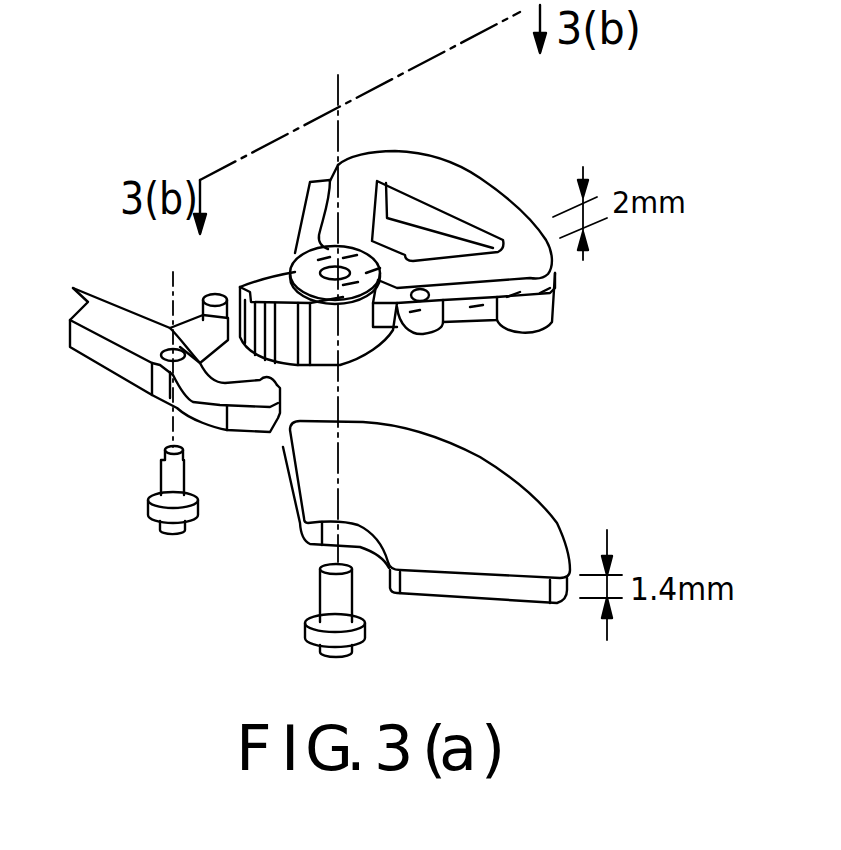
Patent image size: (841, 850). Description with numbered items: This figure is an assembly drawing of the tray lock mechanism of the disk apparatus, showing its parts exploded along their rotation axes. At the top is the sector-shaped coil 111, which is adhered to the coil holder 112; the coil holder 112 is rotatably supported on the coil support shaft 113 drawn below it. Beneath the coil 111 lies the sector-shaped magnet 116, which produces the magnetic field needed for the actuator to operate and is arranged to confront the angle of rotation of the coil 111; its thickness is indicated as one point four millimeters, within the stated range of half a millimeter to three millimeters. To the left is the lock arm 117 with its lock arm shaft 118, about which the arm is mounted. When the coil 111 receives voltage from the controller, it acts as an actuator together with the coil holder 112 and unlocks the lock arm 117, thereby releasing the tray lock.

The coil 111 is at (495, 200).
The coil holder 112 is at (560, 288).
The coil support shaft 113 is at (363, 635).
The magnet 116 is at (523, 500).
The lock arm 117 is at (105, 363).
The lock arm shaft 118 is at (157, 517).